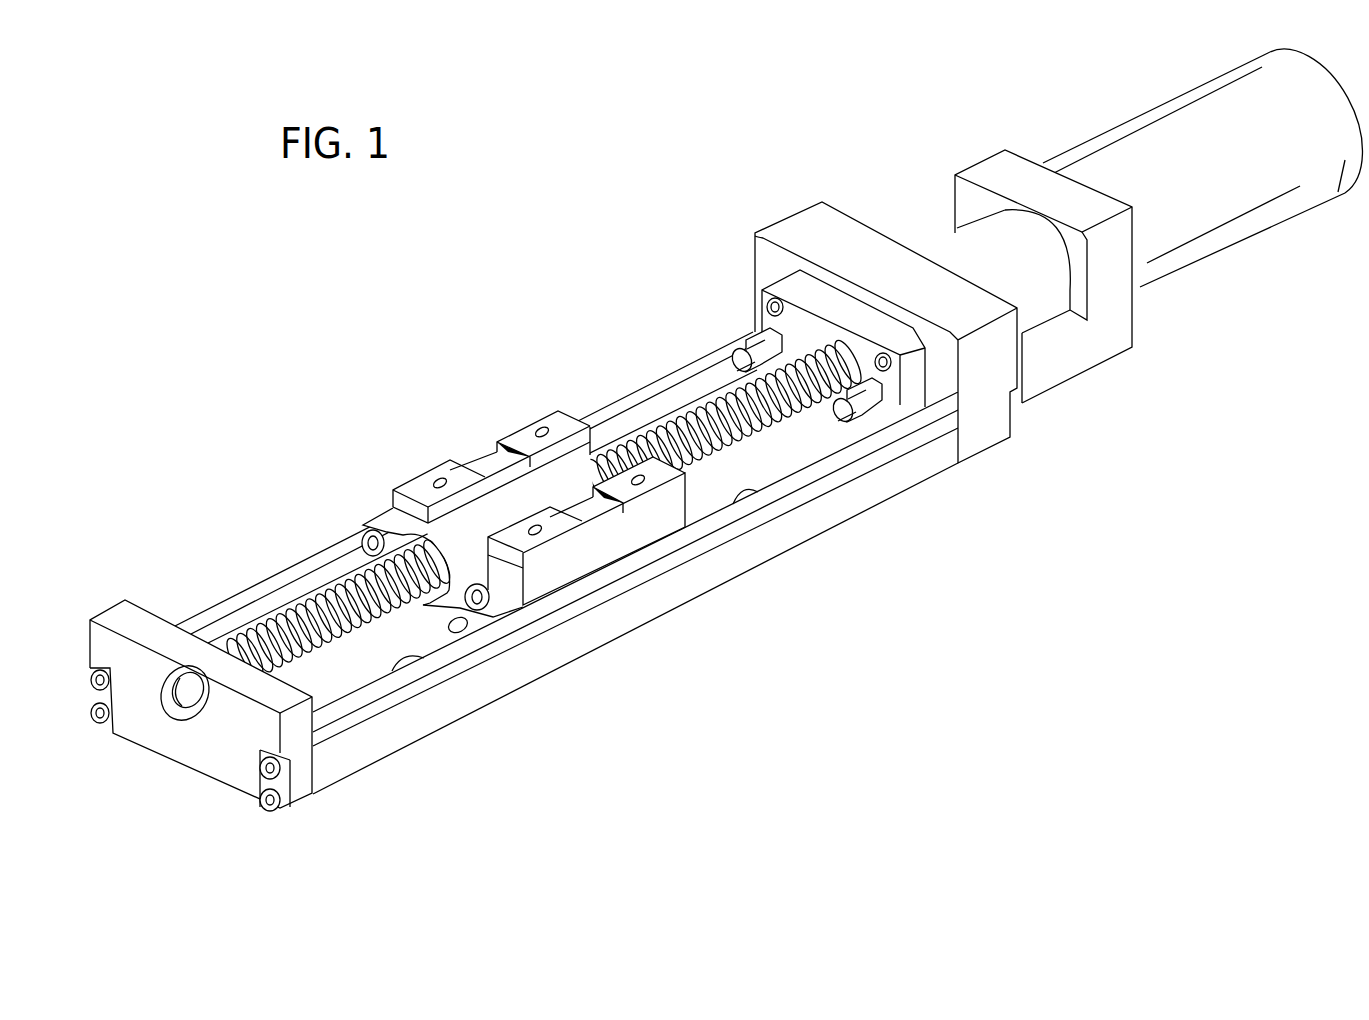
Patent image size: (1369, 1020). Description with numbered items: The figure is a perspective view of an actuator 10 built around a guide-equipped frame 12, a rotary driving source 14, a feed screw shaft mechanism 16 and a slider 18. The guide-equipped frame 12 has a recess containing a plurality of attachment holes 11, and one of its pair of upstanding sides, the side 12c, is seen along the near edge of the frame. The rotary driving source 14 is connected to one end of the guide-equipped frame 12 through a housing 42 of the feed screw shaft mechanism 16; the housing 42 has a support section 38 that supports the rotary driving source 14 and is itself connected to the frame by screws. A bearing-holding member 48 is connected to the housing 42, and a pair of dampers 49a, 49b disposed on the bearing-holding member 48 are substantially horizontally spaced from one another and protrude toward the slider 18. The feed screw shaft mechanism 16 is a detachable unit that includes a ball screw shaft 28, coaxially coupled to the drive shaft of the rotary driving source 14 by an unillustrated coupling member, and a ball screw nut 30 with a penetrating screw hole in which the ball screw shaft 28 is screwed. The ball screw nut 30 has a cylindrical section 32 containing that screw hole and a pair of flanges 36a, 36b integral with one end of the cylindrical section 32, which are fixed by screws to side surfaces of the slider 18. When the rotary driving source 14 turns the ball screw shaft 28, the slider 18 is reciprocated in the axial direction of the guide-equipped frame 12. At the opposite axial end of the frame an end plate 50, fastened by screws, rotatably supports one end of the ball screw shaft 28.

The actuator 10 is at (231, 259).
The attachment holes 11 is at (417, 664).
The guide-equipped frame 12 is at (551, 677).
The side 12c is at (683, 595).
The rotary driving source 14 is at (1120, 147).
The feed screw shaft mechanism 16 is at (473, 510).
The slider 18 is at (570, 567).
The ball screw shaft 28 is at (310, 613).
The ball screw nut 30 is at (447, 527).
The cylindrical section 32 is at (505, 500).
The flange 36a is at (377, 522).
The flange 36b is at (502, 573).
The support section 38 is at (1018, 187).
The housing 42 is at (881, 304).
The bearing-holding member 48 is at (795, 285).
The damper 49a is at (741, 358).
The damper 49b is at (842, 410).
The end plate 50 is at (132, 618).